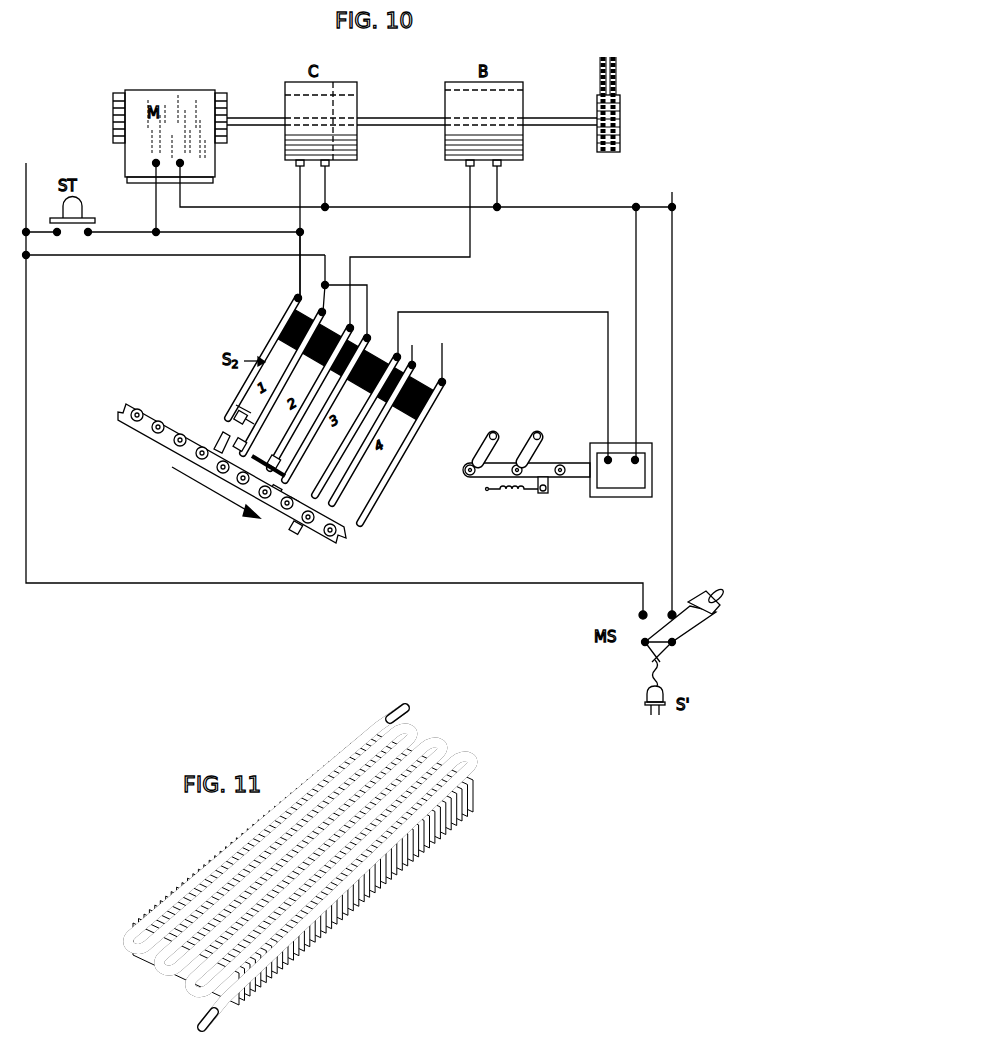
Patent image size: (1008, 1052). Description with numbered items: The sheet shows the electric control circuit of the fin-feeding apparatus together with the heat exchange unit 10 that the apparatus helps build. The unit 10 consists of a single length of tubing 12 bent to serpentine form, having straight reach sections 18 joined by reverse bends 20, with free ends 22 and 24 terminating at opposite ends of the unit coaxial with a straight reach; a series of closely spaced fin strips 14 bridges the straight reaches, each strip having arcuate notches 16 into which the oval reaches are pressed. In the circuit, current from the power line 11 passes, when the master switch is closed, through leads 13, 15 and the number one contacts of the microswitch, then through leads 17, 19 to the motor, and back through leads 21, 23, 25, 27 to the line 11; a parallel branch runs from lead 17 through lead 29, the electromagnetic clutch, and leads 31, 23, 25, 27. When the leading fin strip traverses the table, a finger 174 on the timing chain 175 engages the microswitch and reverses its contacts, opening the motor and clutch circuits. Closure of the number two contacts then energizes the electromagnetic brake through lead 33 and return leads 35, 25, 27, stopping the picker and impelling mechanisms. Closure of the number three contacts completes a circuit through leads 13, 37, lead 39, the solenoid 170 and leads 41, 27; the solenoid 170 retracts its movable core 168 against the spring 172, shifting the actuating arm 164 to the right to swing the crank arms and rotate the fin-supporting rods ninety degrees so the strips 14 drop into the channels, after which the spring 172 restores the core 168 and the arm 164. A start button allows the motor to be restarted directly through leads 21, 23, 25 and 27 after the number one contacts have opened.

In FIG. 11, the heat exchange unit 10 is at (329, 735).
In FIG. 10, the line 11 is at (26, 475).
In FIG. 11, the tubing 12 is at (482, 759).
In FIG. 10, the lead 13 is at (70, 258).
In FIG. 11, the fin strips 14 is at (180, 892).
In FIG. 10, the lead 15 is at (325, 306).
In FIG. 10, the arcuate notches 16 is at (545, 442).
In FIG. 10, the lead 17 is at (296, 278).
In FIG. 11, the straight reach sections 18 is at (326, 940).
In FIG. 10, the lead 19 is at (156, 217).
In FIG. 11, the reverse bends 20 is at (168, 979).
In FIG. 10, the lead 21 is at (215, 207).
In FIG. 11, the free end of tubing 22 is at (217, 1019).
In FIG. 10, the lead 23 is at (365, 207).
In FIG. 11, the free end of tubing 24 is at (400, 706).
In FIG. 10, the lead 25 is at (540, 207).
In FIG. 10, the lead 27 is at (645, 207).
In FIG. 10, the lead 29 is at (298, 186).
In FIG. 10, the lead 31 is at (325, 200).
In FIG. 10, the lead 33 is at (470, 242).
In FIG. 10, the lead 35 is at (497, 197).
In FIG. 10, the lead 37 is at (367, 292).
In FIG. 10, the lead 39 is at (484, 312).
In FIG. 10, the lead 41 is at (641, 300).
In FIG. 10, the actuating arm 164 is at (548, 463).
In FIG. 10, the movable core 168 is at (574, 480).
In FIG. 10, the solenoid 170 is at (623, 500).
In FIG. 10, the spring 172 is at (498, 495).
In FIG. 10, the finger 174 is at (212, 440).
In FIG. 10, the timing chain 175 is at (162, 447).